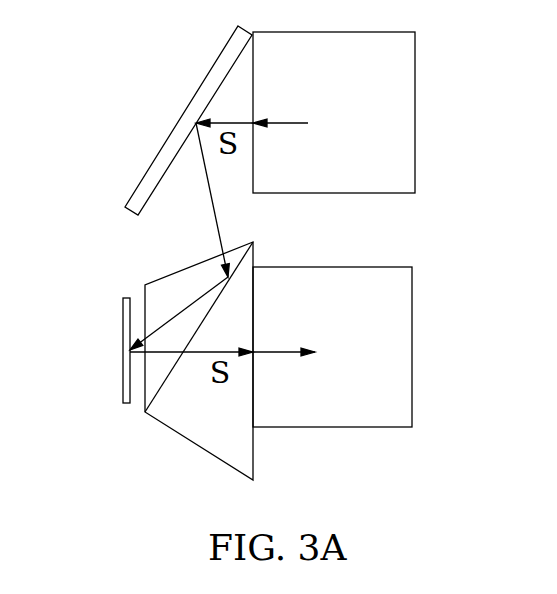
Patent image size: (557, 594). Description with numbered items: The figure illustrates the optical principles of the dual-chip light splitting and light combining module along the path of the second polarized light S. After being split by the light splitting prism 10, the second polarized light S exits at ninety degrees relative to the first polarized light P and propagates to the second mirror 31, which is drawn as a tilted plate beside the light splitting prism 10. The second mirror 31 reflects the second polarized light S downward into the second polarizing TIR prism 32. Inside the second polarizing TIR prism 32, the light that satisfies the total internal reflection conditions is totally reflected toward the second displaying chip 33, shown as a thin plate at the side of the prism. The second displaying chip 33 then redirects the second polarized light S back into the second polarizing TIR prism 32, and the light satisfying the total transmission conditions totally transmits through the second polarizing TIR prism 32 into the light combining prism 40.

The light splitting prism 10 is at (383, 93).
The second mirror 31 is at (172, 145).
The second polarizing TIR prism 32 is at (175, 288).
The second displaying chip 33 is at (123, 327).
The light combining prism 40 is at (383, 317).